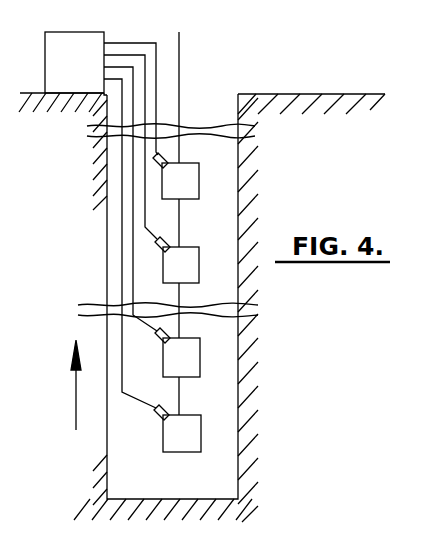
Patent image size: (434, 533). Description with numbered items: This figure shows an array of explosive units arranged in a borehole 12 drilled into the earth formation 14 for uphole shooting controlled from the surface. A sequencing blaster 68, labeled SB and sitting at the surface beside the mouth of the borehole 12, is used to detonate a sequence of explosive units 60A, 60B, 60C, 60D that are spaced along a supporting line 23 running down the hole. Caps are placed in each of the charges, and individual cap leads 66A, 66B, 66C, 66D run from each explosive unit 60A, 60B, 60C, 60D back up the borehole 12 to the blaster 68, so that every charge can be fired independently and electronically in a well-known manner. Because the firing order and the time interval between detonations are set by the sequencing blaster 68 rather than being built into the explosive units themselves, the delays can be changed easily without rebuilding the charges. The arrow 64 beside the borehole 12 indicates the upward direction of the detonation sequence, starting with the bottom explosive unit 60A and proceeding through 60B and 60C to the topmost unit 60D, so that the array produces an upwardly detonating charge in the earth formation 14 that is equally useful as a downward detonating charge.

The borehole 12 is at (107, 227).
The earth formation 14 is at (368, 199).
The cable 23 is at (180, 60).
The explosive unit 60A is at (201, 428).
The explosive unit 60B is at (200, 357).
The explosive unit 60C is at (197, 247).
The explosive unit 60D is at (199, 183).
The direction arrow 64 is at (74, 405).
The cap lead 66A is at (142, 408).
The cap lead 66B is at (148, 332).
The cap lead 66C is at (136, 52).
The cap lead 66D is at (125, 40).
The sequencing blaster 68 is at (68, 30).